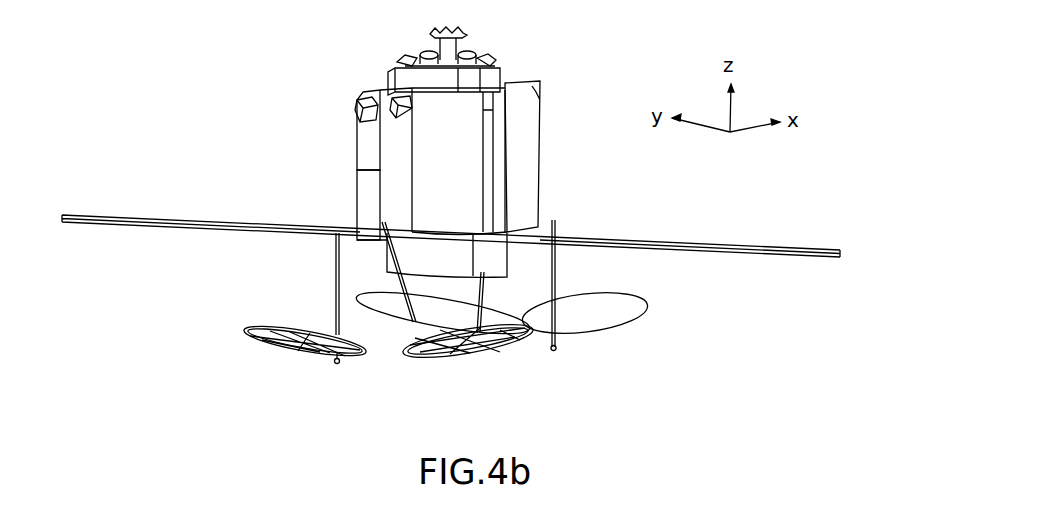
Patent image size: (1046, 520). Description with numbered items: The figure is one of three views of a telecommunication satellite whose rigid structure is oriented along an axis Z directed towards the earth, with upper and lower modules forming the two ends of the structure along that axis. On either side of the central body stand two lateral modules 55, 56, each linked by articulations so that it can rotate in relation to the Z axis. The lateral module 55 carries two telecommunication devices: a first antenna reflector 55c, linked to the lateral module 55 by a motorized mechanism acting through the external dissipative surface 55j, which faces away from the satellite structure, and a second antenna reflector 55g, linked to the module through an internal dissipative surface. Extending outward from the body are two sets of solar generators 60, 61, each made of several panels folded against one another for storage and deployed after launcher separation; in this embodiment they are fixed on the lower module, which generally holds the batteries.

The lateral module 55 is at (362, 145).
The external dissipative surface 55j is at (397, 197).
The lateral module 56 is at (520, 133).
The set of solar generators 60 is at (718, 243).
The set of solar generators 61 is at (170, 220).
The antenna reflector 55g is at (290, 348).
The antenna reflector 55c is at (477, 355).